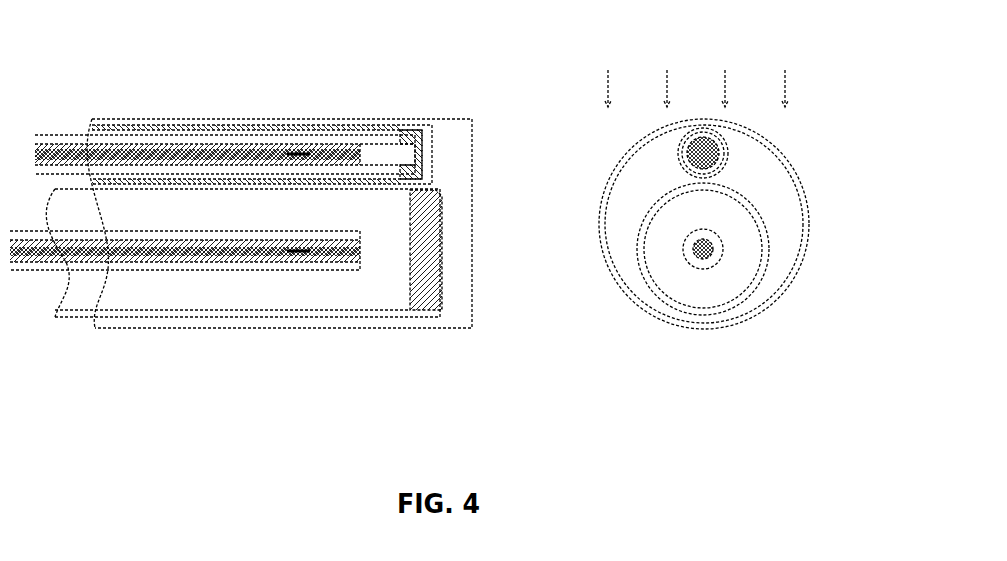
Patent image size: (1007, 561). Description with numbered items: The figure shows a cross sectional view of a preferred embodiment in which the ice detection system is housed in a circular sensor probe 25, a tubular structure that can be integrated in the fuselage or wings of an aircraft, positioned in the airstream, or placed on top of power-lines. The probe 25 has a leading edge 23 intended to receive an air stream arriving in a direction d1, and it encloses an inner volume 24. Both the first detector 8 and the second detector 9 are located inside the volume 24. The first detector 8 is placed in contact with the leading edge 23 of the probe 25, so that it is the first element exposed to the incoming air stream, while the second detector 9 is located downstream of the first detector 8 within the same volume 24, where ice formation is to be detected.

The first detector 8 is at (173, 130).
The second detector 9 is at (207, 313).
The leading edge 23 is at (722, 123).
The inner volume 24 is at (742, 180).
The circular sensor probe 25 is at (285, 120).
The air stream direction d1 is at (696, 72).